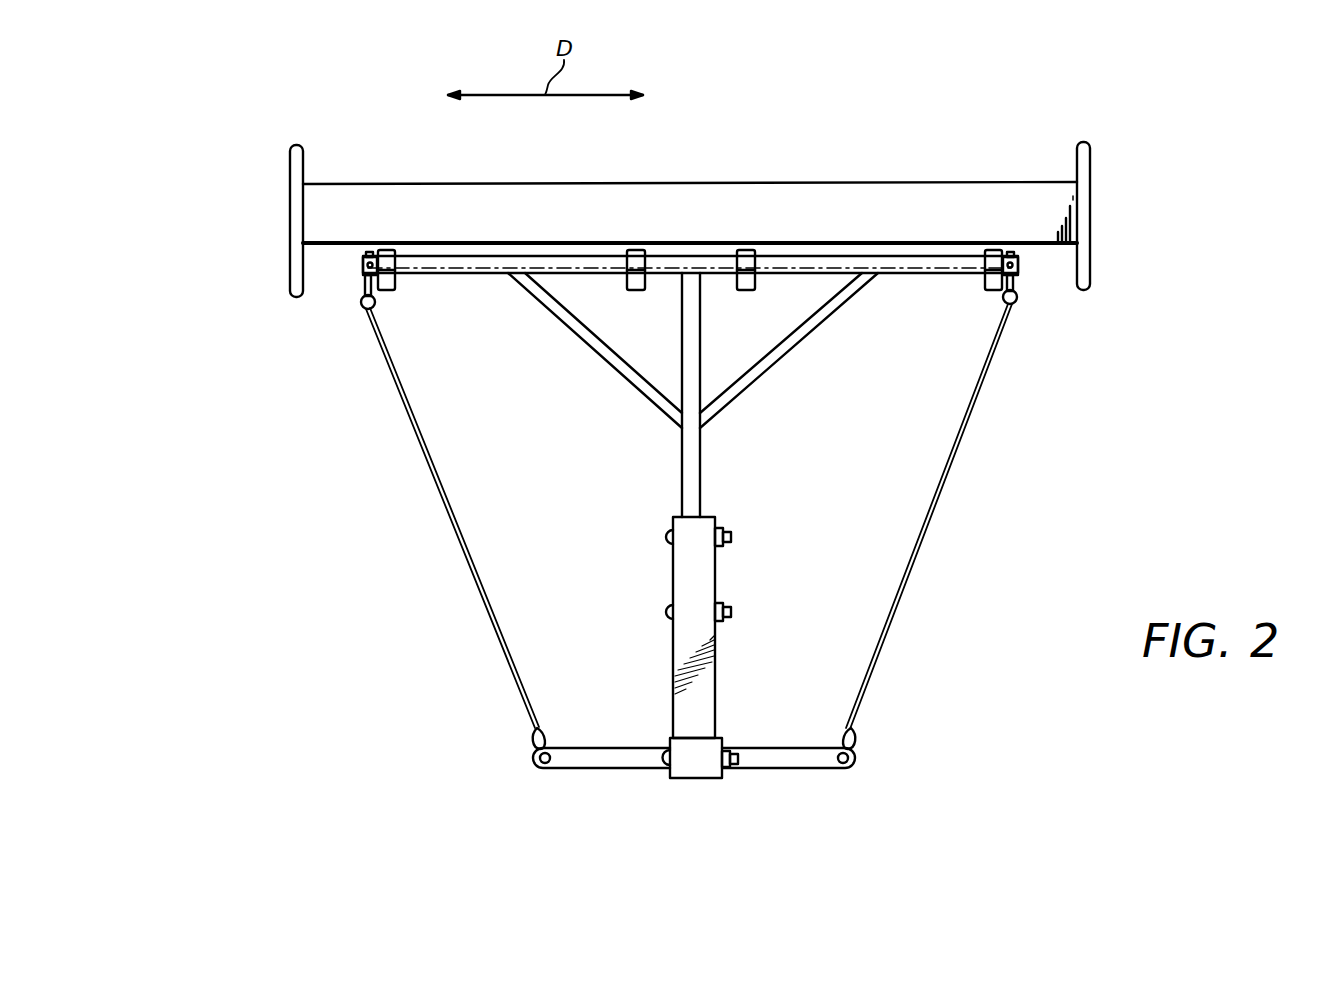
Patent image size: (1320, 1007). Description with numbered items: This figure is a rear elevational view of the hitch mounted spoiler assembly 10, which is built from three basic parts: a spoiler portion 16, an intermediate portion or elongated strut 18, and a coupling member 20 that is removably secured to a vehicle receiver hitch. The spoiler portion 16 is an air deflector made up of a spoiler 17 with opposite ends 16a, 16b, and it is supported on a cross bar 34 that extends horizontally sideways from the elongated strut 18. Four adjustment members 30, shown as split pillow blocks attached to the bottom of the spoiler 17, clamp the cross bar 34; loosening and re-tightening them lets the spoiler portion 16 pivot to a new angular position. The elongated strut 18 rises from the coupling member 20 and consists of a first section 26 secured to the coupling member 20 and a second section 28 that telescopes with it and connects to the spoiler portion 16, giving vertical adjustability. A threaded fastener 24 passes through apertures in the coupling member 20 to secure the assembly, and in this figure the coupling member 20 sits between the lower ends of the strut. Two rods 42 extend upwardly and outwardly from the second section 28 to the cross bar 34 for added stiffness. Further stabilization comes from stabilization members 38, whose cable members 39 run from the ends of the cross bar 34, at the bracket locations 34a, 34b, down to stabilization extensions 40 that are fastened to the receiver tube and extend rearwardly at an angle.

The hitch mounted spoiler assembly 10 is at (925, 87).
The spoiler portion 16 is at (232, 216).
The spoiler 17 is at (348, 196).
The opposite end of the spoiler portion 16a is at (330, 288).
The opposite end of the spoiler portion 16b is at (1040, 283).
The elongated strut 18 is at (625, 497).
The coupling member 20 is at (695, 765).
The threaded fastener 24 is at (731, 537).
The first section 26 is at (692, 305).
The second section 28 is at (707, 708).
The adjustment member 30 is at (387, 250).
The cross bar 34 is at (938, 266).
The left bracket 34a is at (363, 263).
The right bracket 34b is at (1018, 262).
The stabilization member 38 is at (415, 595).
The cable member 39 is at (402, 399).
The stabilization extension 40 is at (600, 768).
The rod 42 is at (612, 356).